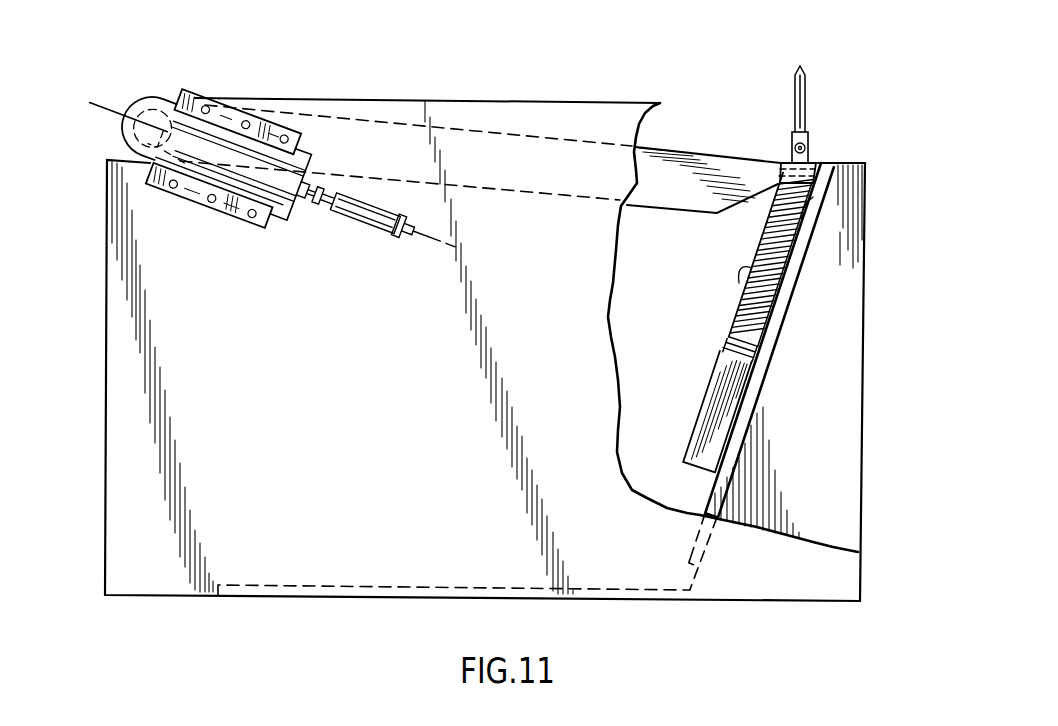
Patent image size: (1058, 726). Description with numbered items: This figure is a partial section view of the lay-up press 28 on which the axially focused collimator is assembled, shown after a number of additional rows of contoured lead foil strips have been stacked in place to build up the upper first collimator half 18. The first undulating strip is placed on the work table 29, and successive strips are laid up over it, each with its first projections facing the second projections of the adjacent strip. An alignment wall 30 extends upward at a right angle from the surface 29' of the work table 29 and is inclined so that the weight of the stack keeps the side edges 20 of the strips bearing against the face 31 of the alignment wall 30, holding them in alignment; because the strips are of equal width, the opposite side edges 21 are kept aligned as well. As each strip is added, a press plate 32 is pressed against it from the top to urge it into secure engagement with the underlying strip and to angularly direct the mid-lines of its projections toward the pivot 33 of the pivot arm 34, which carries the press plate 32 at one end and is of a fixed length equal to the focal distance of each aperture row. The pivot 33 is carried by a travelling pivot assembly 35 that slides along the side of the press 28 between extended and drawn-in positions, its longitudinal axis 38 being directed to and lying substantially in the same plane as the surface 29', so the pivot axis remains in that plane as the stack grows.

The upper first collimator half 18 is at (783, 268).
The side edge 20 is at (785, 312).
The side edge 21 is at (740, 320).
The lay-up press 28 is at (205, 340).
The work table 29 is at (808, 437).
The surface of work table 29' is at (821, 370).
The alignment wall 30 is at (807, 230).
The face of alignment wall 31 is at (816, 184).
The press plate 32 is at (792, 187).
The pivot 33 is at (157, 120).
The pivot arm 34 is at (677, 158).
The travelling pivot assembly 35 is at (227, 100).
The longitudinal axis 38 is at (110, 108).